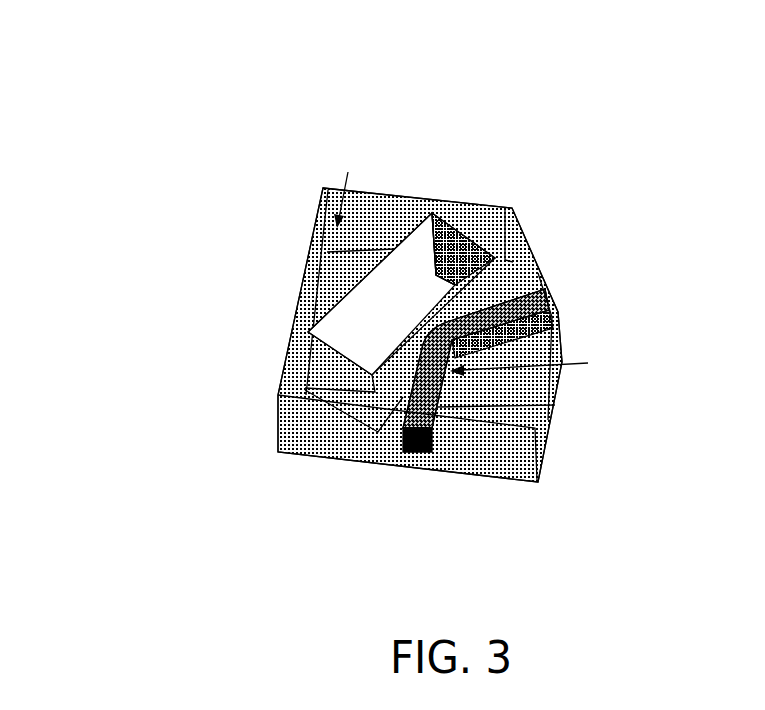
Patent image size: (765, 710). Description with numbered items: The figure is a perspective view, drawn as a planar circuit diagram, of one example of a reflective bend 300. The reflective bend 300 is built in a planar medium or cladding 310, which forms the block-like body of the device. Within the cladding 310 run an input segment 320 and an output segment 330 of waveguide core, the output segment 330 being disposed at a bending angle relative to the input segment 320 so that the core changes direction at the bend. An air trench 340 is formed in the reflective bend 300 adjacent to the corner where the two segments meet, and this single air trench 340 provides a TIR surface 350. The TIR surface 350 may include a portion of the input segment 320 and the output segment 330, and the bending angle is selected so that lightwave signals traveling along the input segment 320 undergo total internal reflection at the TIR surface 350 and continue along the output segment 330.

The reflective bend 300 is at (87, 67).
The cladding 310 is at (306, 299).
The input segment 320 is at (403, 452).
The output segment 330 is at (546, 291).
The air trench 340 is at (460, 272).
The TIR surface 350 is at (432, 311).